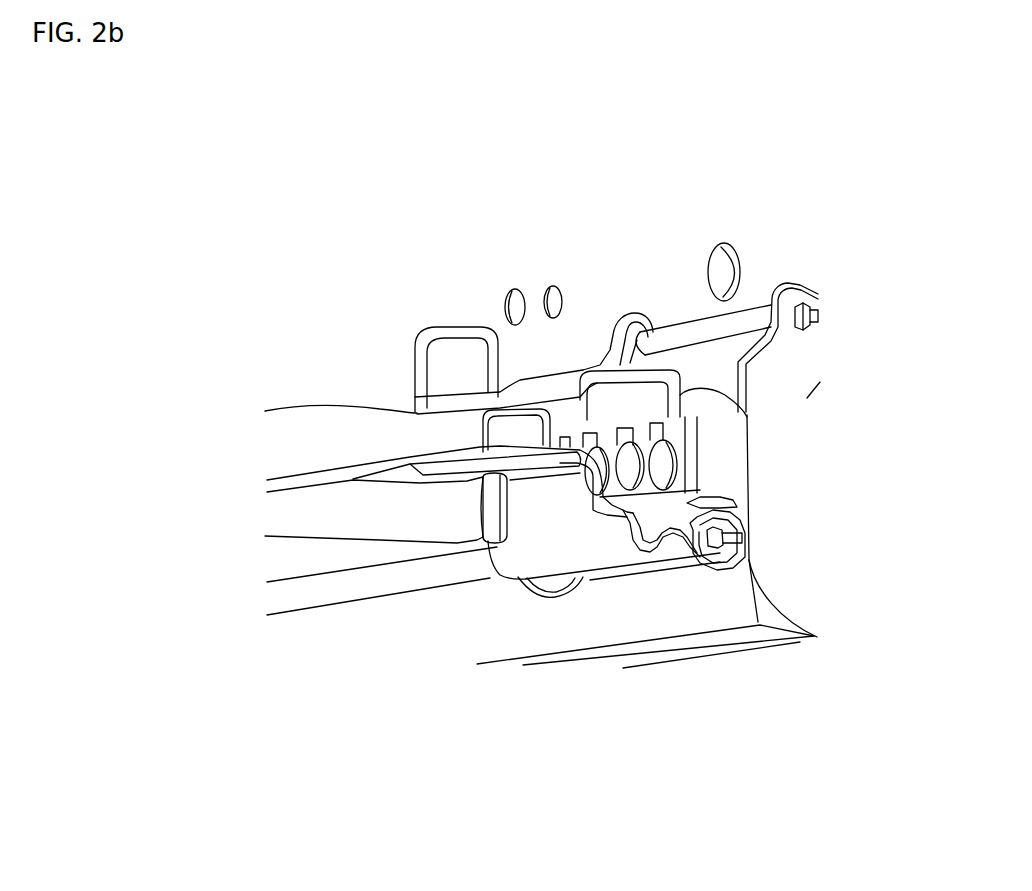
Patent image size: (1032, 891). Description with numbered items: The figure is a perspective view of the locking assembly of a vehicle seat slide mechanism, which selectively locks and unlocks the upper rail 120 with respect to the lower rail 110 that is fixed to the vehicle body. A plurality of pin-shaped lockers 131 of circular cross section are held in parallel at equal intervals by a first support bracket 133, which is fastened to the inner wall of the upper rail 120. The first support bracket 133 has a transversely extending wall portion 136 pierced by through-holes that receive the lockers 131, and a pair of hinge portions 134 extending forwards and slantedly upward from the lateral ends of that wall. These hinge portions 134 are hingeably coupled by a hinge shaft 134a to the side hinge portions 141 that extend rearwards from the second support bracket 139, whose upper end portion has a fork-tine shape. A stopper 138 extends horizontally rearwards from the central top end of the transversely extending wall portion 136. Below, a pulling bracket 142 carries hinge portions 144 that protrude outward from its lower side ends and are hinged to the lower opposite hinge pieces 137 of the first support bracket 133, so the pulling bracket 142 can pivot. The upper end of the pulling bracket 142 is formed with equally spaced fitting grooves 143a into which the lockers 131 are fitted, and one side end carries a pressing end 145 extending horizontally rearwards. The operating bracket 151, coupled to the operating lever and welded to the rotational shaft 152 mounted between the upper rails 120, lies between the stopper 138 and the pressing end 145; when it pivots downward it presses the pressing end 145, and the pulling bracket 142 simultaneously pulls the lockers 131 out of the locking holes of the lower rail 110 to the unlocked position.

The lower rail 110 is at (442, 628).
The upper rail 120 is at (353, 553).
The locker 131 is at (637, 540).
The first support bracket 133 is at (770, 368).
The hinge portion 134 is at (607, 333).
The hinge shaft 134a is at (690, 335).
The transversely extending wall portion 136 is at (722, 452).
The lower opposite hinge piece 137 is at (730, 553).
The stopper 138 is at (499, 395).
The second support bracket 139 is at (712, 377).
The side hinge portion 141 is at (641, 325).
The pulling bracket 142 is at (585, 538).
The fitting groove 143a is at (747, 410).
The hinge portion 144 is at (737, 497).
The pressing end 145 is at (500, 473).
The operating bracket 151 is at (307, 403).
The rotational shaft 152 is at (338, 522).